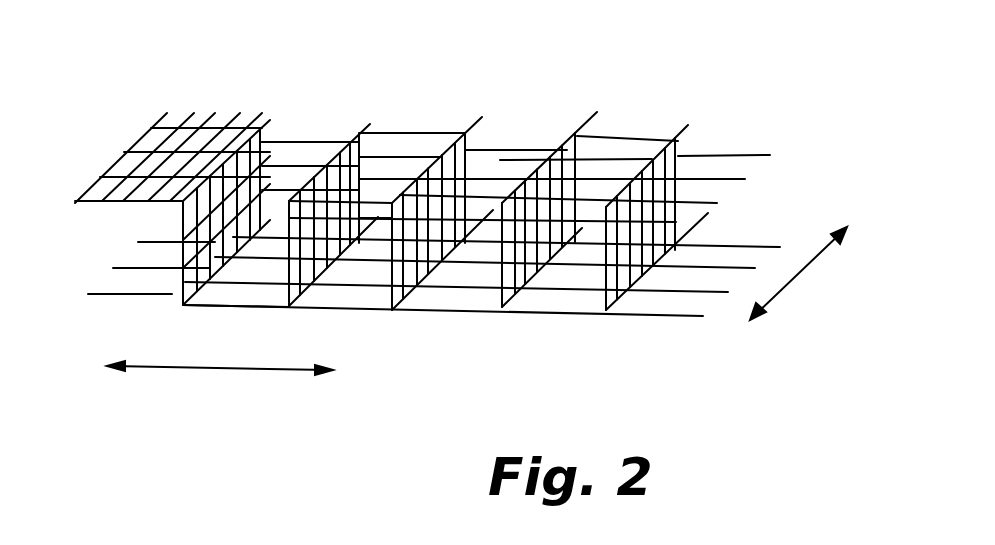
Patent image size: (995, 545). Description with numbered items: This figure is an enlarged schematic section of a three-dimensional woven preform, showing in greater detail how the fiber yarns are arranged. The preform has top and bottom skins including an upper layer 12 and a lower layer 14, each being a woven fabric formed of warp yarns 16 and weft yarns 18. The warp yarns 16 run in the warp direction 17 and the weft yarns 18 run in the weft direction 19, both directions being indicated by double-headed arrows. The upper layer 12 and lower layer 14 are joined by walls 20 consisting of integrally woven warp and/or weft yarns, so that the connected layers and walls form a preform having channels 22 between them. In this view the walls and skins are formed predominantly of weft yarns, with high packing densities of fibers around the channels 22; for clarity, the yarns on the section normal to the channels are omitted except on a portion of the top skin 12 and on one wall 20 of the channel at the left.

The upper layer 12 is at (122, 145).
The lower layer 14 is at (88, 294).
The warp yarns 16 is at (692, 205).
The warp direction 17 is at (812, 262).
The weft yarns 18 is at (508, 145).
The weft direction 19 is at (237, 370).
The walls 20 is at (175, 293).
The channels 22 is at (303, 145).